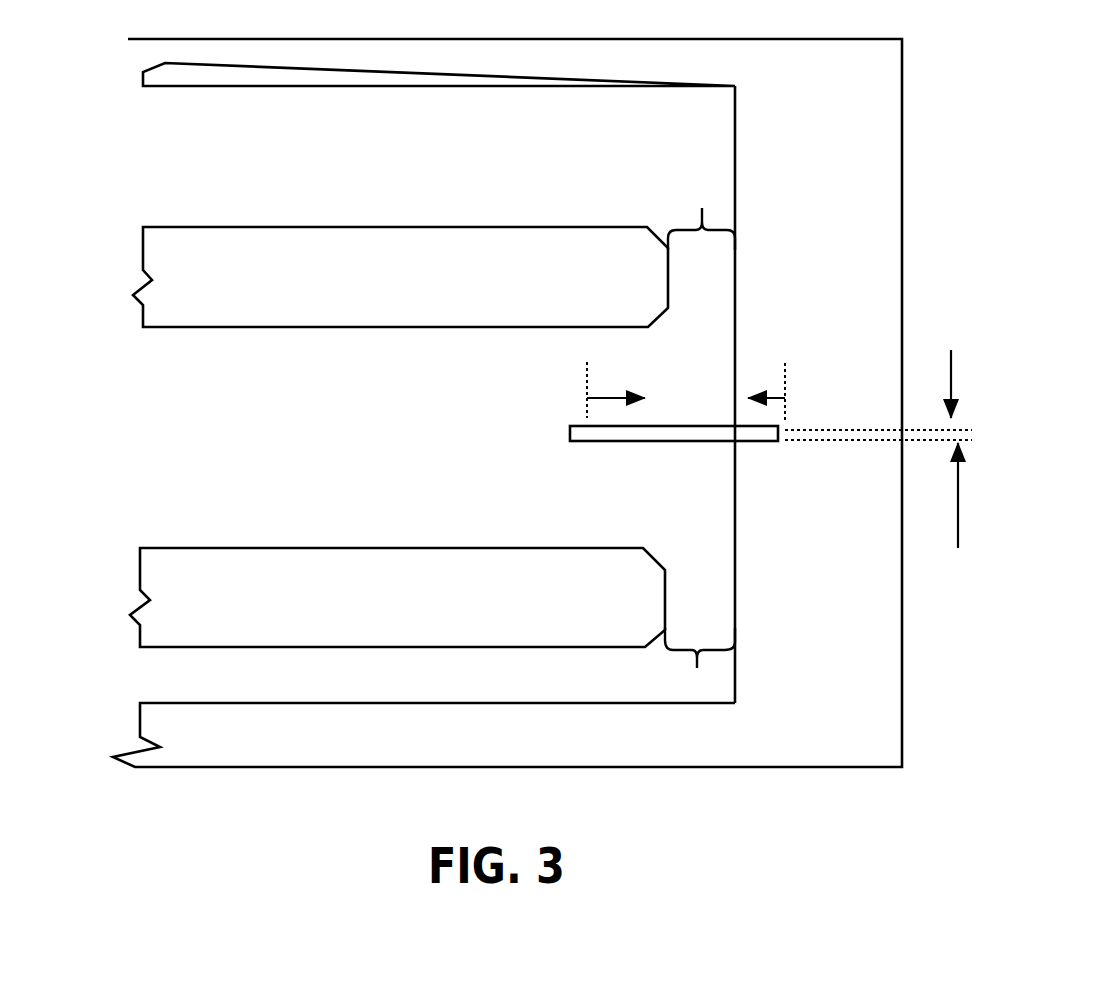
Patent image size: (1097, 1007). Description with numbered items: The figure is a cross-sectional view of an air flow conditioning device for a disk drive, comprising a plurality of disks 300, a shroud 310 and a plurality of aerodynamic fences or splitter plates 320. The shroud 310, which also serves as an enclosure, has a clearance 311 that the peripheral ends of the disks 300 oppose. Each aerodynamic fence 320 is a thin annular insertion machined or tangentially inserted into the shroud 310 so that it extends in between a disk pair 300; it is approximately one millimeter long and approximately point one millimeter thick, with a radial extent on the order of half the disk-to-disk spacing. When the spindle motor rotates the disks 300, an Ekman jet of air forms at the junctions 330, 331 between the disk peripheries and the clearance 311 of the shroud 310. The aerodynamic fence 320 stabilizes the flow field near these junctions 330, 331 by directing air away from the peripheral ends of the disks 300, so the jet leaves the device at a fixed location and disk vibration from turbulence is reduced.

The disks 300 is at (212, 344).
The shroud 310 is at (917, 233).
The clearance 311 is at (762, 136).
The aerodynamic fence 320 is at (702, 452).
The junction 330 is at (702, 207).
The junction 331 is at (697, 668).